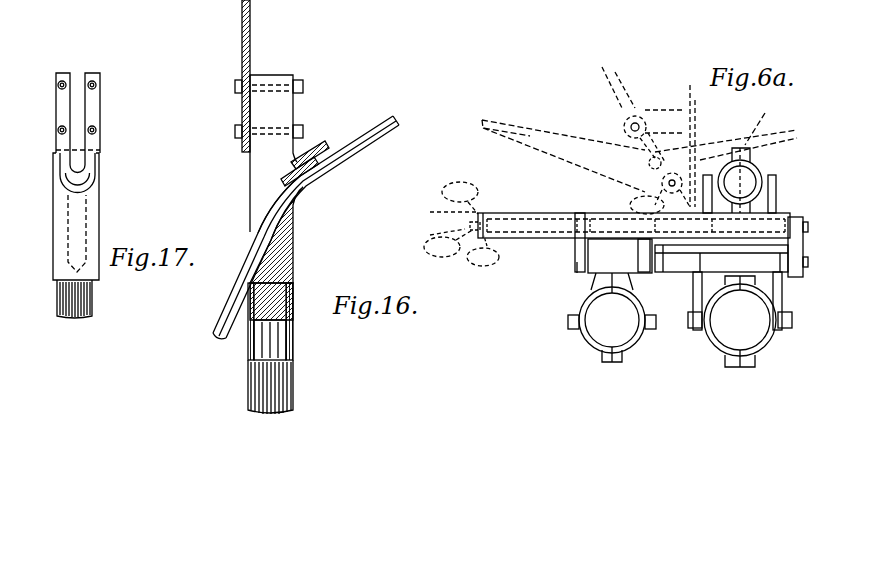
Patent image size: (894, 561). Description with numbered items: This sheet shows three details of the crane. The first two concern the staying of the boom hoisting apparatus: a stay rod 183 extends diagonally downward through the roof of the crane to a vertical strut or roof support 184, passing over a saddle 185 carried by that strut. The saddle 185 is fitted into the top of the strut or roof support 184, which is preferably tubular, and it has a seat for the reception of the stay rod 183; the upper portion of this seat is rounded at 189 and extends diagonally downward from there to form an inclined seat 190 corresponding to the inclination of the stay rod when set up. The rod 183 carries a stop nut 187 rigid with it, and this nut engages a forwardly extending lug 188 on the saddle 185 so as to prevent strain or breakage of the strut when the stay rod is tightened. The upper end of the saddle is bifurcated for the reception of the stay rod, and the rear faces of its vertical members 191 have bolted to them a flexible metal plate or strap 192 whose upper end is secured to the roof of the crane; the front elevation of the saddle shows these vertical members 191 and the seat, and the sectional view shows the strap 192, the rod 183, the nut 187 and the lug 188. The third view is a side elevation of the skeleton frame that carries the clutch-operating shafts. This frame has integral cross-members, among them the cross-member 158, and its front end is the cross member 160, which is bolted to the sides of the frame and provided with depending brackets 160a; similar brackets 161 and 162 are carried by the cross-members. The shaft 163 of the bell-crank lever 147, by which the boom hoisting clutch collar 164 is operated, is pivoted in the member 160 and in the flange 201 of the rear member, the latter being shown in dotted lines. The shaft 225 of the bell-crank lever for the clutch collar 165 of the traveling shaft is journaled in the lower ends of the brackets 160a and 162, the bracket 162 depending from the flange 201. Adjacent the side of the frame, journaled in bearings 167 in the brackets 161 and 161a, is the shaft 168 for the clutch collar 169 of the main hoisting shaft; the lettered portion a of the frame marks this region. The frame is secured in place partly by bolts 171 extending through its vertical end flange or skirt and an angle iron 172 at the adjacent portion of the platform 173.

In FIG. 17, the vertical members 191 is at (90, 110).
In FIG. 16, the vertical members 191 is at (250, 166).
In FIG. 17, the saddle 185 is at (90, 213).
In FIG. 16, the saddle 185 is at (268, 256).
In FIG. 16, the flexible metal plate or strap 192 is at (249, 50).
In FIG. 16, the inclined seat 190 is at (288, 267).
In FIG. 16, the vertical strut or roof support 184 is at (290, 345).
In FIG. 16, the stay rod 183 is at (363, 133).
In FIG. 16, the forwardly extending lug 188 is at (300, 195).
In FIG. 16, the stop nut 187 is at (311, 149).
In FIG. 16, the rounded upper portion of seat 189 is at (296, 200).
In FIG. 6A, the cross-member 158 is at (523, 235).
In FIG. 6A, the tube end a is at (555, 238).
In FIG. 6A, the platform 173 is at (454, 198).
In FIG. 6A, the angle iron 172 is at (449, 243).
In FIG. 6A, the bolts 171 is at (483, 244).
In FIG. 6A, the flange 201 is at (639, 140).
In FIG. 6A, the boom hoisting clutch collar 164 is at (758, 170).
In FIG. 6A, the bell-crank lever 147 is at (777, 197).
In FIG. 6A, the brackets 161 is at (580, 253).
In FIG. 6A, the shaft 168 is at (620, 256).
In FIG. 6A, the bearings 167 is at (577, 272).
In FIG. 6A, the clutch collar 169 is at (592, 302).
In FIG. 6A, the brackets 161a is at (647, 280).
In FIG. 6A, the brackets 162 is at (665, 249).
In FIG. 6A, the shaft 225 is at (740, 262).
In FIG. 6A, the shaft 163 is at (805, 228).
In FIG. 6A, the cross member 160 is at (808, 236).
In FIG. 6A, the brackets 160a is at (808, 262).
In FIG. 6A, the clutch collar 165 is at (720, 303).